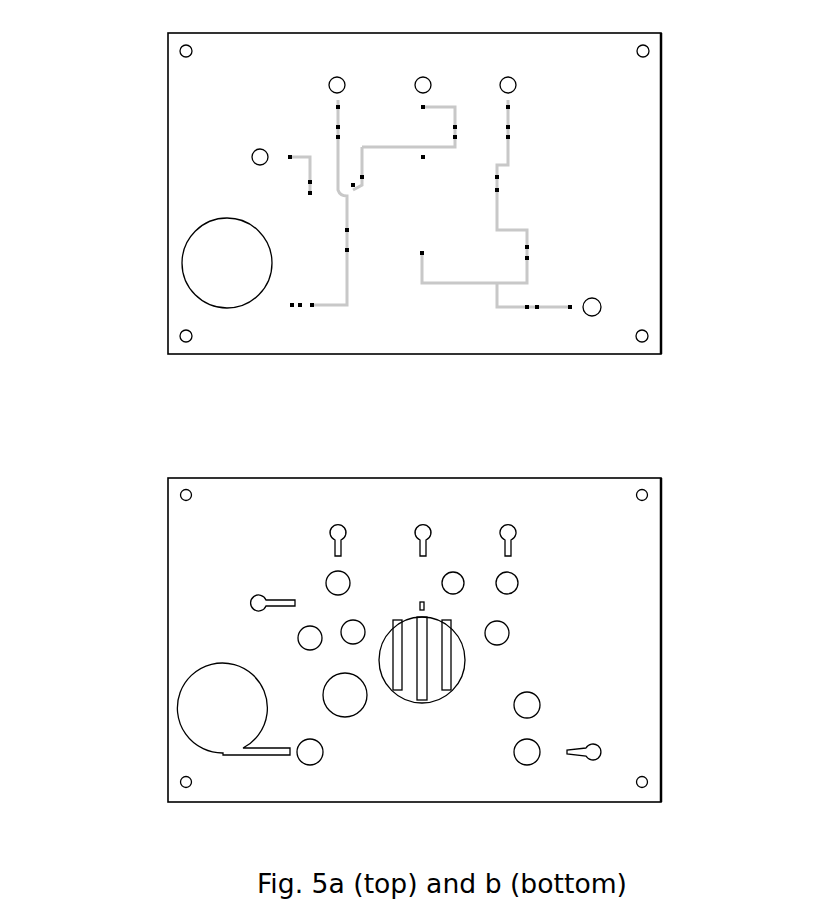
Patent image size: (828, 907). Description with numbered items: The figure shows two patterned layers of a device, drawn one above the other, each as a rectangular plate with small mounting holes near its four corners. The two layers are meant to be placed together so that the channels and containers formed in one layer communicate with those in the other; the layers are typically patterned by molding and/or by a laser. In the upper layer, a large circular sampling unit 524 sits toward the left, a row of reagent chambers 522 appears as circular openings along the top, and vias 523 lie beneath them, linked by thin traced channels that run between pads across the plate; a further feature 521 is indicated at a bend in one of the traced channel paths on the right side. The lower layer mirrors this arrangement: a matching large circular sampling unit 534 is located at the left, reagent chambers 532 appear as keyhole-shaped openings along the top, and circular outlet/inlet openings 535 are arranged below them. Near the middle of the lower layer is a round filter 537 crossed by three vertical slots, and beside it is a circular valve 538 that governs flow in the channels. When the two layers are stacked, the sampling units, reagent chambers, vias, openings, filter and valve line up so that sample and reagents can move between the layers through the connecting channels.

In FIG. 5A, the conductive trace 521 is at (528, 238).
In FIG. 5A, the reagent chamber 522 is at (528, 85).
In FIG. 5A, the via 523 is at (518, 133).
In FIG. 5A, the sampling unit 524 is at (233, 263).
In FIG. 5B, the reagent chamber 532 is at (528, 532).
In FIG. 5B, the sampling unit 534 is at (233, 708).
In FIG. 5B, the outlet/inlet opening 535 is at (519, 588).
In FIG. 5B, the filter 537 is at (431, 666).
In FIG. 5B, the valve 538 is at (354, 707).